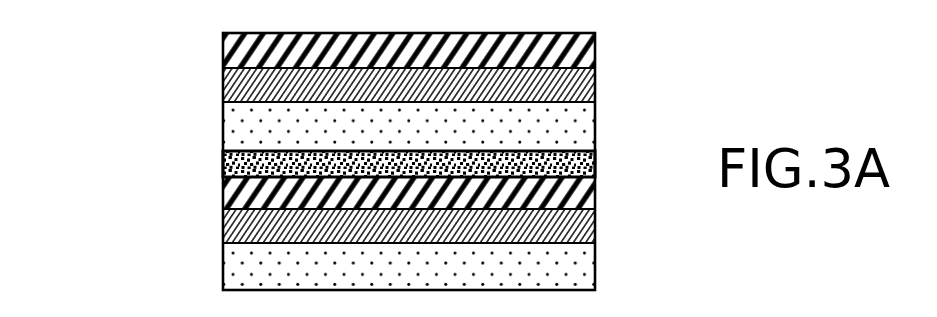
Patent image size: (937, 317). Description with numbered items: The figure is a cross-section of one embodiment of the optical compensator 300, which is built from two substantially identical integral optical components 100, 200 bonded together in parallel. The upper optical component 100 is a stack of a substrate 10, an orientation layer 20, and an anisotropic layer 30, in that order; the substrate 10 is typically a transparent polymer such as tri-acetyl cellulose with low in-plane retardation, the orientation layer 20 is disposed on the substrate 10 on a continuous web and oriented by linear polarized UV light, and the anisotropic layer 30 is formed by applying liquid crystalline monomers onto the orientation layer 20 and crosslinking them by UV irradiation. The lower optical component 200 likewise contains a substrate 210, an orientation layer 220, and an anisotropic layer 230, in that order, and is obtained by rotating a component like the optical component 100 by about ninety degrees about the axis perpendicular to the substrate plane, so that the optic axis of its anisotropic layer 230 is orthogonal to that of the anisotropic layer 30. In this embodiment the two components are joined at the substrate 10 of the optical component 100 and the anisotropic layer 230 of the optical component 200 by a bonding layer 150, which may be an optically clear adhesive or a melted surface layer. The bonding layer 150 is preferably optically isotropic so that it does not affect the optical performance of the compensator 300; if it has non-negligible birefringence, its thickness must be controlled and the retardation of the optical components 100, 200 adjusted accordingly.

The anisotropic layer 30 is at (595, 54).
The orientation layer 20 is at (595, 88).
The substrate 10 is at (595, 137).
The bonding layer 150 is at (595, 165).
The anisotropic layer 230 is at (595, 197).
The orientation layer 220 is at (595, 228).
The substrate 210 is at (595, 278).
The optical component 100 is at (208, 34).
The optical component 200 is at (208, 177).
The optical compensator 300 is at (122, 53).